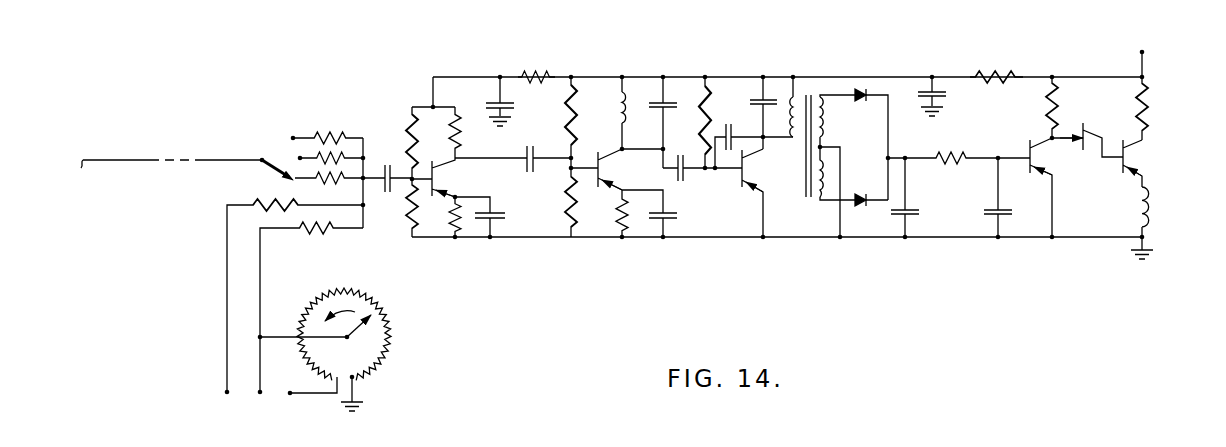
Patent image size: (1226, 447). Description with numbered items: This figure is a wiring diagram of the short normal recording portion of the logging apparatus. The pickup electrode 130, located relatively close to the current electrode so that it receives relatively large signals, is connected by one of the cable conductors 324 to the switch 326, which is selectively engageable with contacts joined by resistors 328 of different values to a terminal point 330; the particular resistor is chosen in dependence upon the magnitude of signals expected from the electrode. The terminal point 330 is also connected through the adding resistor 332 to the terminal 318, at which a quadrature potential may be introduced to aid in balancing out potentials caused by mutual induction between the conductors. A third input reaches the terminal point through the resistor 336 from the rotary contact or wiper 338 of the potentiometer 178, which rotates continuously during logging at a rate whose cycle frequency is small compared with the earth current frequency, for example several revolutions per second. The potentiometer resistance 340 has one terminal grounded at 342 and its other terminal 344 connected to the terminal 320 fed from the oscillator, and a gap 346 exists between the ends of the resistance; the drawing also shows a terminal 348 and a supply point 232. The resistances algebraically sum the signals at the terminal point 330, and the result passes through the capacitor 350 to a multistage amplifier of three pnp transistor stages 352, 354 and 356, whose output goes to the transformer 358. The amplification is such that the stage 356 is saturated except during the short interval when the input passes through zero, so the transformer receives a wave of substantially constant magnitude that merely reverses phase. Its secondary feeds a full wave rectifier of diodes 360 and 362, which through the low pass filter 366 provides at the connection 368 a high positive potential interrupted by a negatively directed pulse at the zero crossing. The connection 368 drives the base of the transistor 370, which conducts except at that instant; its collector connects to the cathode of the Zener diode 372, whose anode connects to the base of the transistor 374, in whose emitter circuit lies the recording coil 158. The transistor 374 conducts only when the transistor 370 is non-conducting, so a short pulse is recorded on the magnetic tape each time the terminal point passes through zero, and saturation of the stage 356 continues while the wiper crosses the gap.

The pickup electrode 130 is at (102, 177).
The cable conductor 324 is at (155, 160).
The switch 326 is at (272, 167).
The resistors 328 is at (337, 182).
The terminal point 330 is at (365, 185).
The capacitor 350 is at (386, 168).
The adding resistor 332 is at (262, 198).
The resistor 336 is at (314, 233).
The transistor stage 352 is at (517, 214).
The transistor stage 354 is at (687, 220).
The transistor stage 356 is at (783, 210).
The transformer 358 is at (813, 90).
The rectifying diode 360 is at (865, 92).
The rectifying diode 362 is at (868, 203).
The low pass filter 366 is at (961, 148).
The connection 368 is at (1012, 156).
The transistor 370 is at (1031, 171).
The Zener diode 372 is at (1088, 126).
The transistor 374 is at (1141, 153).
The recording coil 158 is at (1149, 207).
The supply terminal 232 is at (1150, 55).
The potentiometer 178 is at (395, 306).
The rotary contact or wiper 338 is at (356, 331).
The potentiometer resistance 340 is at (376, 358).
The ground 342 is at (361, 394).
The terminal 344 is at (339, 377).
The gap 346 is at (344, 383).
The terminal 320 is at (290, 395).
The terminal 348 is at (262, 395).
The terminal 318 is at (226, 395).